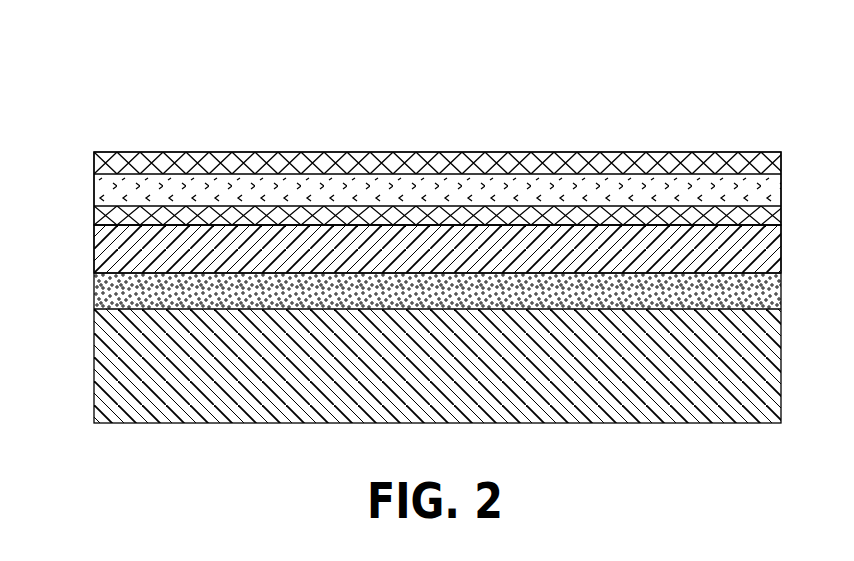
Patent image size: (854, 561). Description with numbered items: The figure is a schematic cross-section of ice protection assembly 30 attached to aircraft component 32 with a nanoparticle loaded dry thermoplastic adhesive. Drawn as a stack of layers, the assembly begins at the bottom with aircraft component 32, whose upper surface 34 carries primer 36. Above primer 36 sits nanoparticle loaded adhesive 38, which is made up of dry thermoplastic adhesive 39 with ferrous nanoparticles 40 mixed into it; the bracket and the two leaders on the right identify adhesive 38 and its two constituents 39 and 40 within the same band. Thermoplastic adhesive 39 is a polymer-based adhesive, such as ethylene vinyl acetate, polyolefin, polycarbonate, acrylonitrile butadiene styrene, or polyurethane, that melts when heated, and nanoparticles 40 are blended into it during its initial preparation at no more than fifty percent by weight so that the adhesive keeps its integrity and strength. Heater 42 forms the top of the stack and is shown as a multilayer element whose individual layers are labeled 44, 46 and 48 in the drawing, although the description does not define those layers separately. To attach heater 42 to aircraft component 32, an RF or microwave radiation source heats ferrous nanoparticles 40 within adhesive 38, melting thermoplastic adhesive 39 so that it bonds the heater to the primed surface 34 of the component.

The ice protection assembly 30 is at (235, 96).
The aircraft component 32 is at (782, 376).
The surface 34 is at (139, 311).
The primer 36 is at (782, 300).
The nanoparticle loaded adhesive 38 is at (88, 225).
The dry thermoplastic adhesive 39 is at (782, 262).
The ferrous nanoparticles 40 is at (782, 234).
The heater 42 is at (69, 147).
The outer layer 44 is at (719, 152).
The core layer 46 is at (768, 186).
The inner layer 48 is at (93, 196).